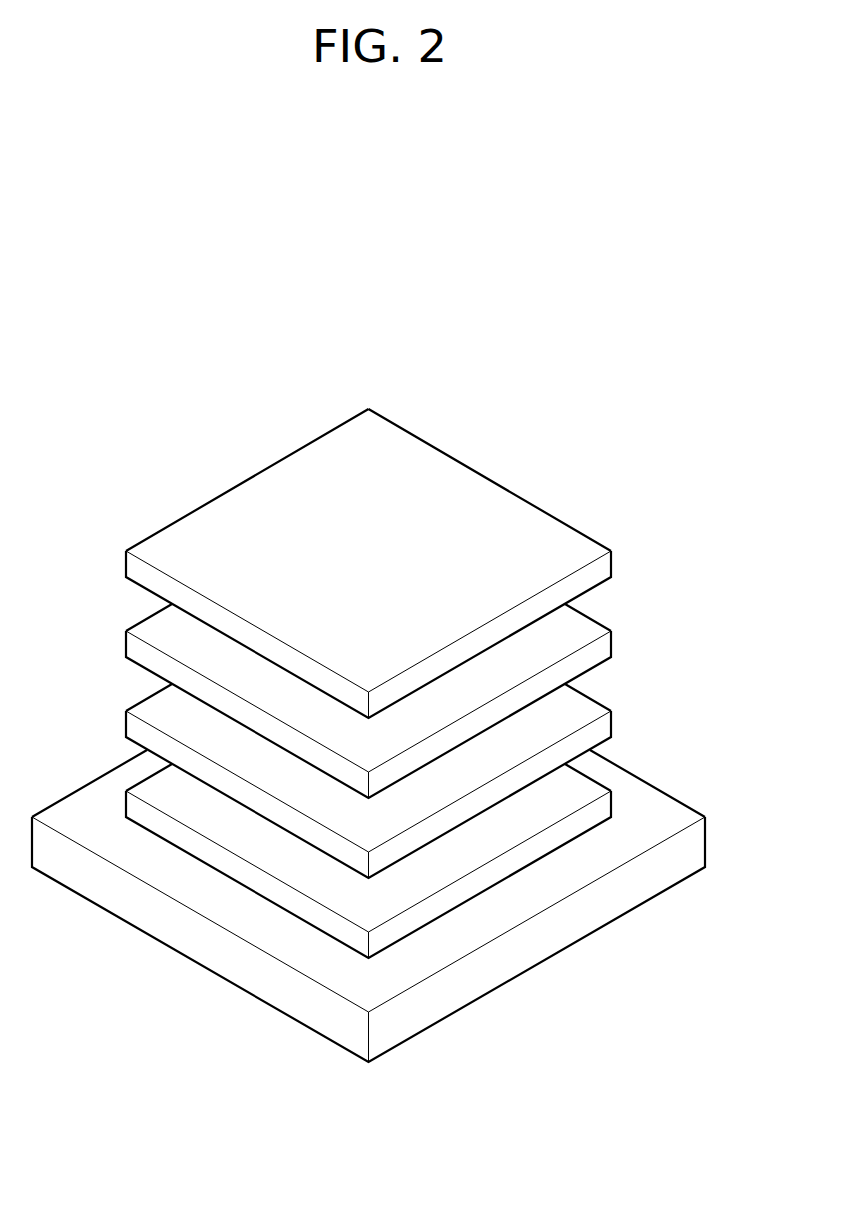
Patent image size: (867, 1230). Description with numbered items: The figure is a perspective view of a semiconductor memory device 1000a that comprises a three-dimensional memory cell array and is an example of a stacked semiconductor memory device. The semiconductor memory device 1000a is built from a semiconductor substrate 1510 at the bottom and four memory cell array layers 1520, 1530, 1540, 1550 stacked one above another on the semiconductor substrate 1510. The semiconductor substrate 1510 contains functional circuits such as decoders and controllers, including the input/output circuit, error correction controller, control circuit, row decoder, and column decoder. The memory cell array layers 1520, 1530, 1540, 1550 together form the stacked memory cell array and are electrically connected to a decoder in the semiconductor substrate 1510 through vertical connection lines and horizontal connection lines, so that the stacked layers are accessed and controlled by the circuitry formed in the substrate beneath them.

The semiconductor memory device 1000a is at (404, 357).
The semiconductor substrate 1510 is at (679, 853).
The memory cell array layer 1520 is at (598, 808).
The memory cell array layer 1530 is at (600, 728).
The memory cell array layer 1540 is at (600, 648).
The memory cell array layer 1550 is at (600, 568).